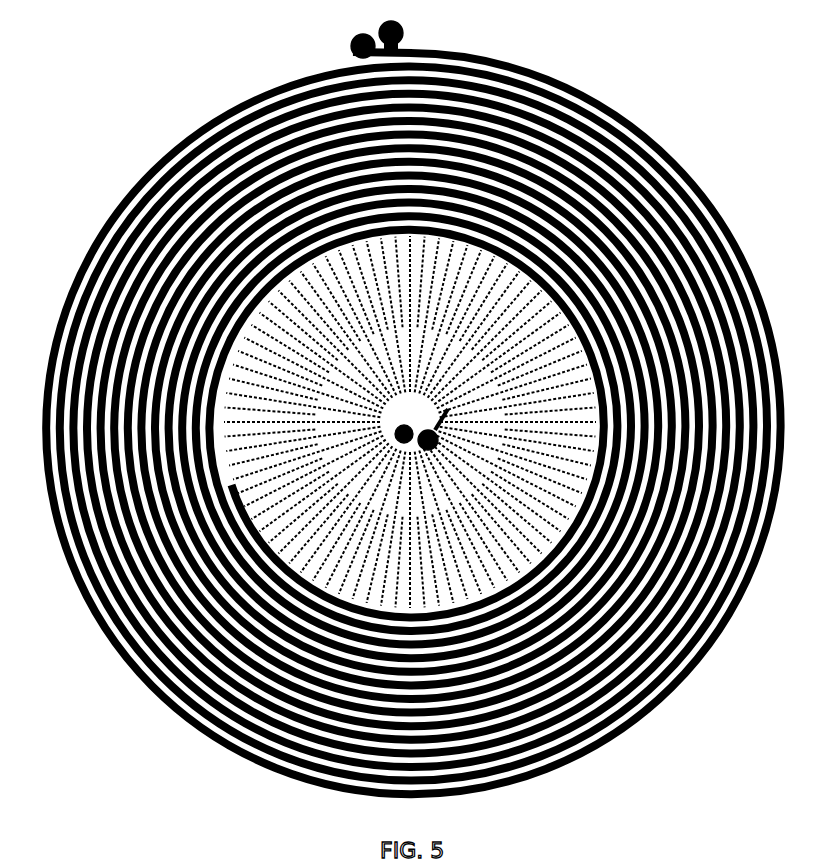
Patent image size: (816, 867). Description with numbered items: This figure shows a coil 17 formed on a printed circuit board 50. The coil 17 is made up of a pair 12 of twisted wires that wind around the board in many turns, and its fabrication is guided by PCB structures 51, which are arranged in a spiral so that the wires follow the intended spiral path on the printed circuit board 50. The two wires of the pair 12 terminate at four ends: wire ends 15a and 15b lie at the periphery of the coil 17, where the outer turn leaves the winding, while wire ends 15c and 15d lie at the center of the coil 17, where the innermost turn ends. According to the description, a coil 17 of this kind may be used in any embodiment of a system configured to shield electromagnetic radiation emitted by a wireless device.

The pair of twisted wires 12 is at (468, 44).
The wire end 15a is at (340, 44).
The wire end 15b is at (414, 35).
The wire end 15c is at (400, 423).
The wire end 15d is at (418, 439).
The coil 17 is at (621, 99).
The printed circuit board 50 is at (413, 405).
The PCB structures 51 is at (429, 516).